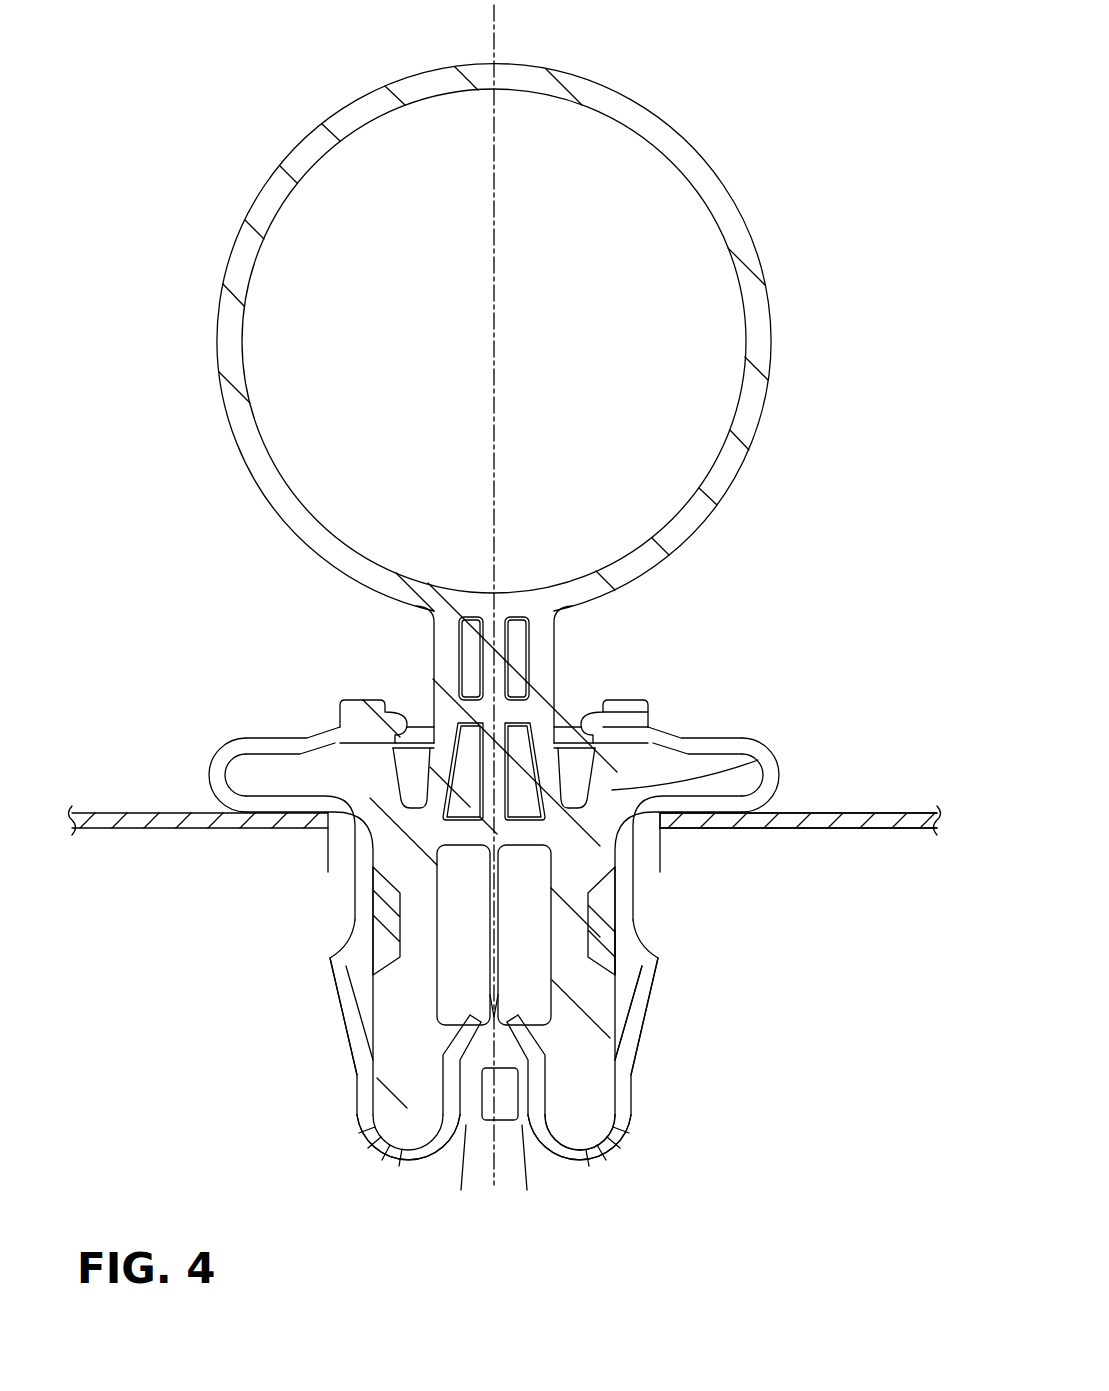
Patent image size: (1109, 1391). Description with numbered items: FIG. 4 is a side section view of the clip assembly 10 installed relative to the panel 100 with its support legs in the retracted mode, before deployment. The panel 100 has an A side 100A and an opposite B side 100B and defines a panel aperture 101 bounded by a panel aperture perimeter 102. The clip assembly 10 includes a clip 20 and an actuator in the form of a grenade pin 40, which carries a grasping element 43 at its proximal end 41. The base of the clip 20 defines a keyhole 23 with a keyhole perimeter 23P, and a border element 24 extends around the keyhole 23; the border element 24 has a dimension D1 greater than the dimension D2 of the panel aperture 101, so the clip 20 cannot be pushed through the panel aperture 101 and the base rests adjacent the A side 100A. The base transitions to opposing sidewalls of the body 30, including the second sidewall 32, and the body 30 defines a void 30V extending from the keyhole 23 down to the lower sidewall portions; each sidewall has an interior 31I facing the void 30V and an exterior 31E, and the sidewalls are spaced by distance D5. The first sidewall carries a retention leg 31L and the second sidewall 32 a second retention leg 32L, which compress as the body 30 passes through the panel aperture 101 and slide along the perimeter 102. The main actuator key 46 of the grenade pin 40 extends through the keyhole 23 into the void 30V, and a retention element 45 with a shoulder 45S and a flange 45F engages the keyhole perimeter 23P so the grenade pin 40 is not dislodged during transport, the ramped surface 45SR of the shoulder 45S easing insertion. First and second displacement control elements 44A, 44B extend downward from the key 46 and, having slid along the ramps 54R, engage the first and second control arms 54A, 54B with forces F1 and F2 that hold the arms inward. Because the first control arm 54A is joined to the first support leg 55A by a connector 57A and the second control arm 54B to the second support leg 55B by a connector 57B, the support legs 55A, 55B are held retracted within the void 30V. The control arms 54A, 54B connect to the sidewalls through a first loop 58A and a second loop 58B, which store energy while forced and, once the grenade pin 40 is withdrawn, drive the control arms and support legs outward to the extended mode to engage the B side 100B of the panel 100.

The clip assembly 10 is at (222, 589).
The clip 20 is at (219, 736).
The keyhole 23 is at (573, 730).
The keyhole perimeter 23P is at (653, 743).
The border element 24 is at (310, 730).
The body 30 is at (657, 940).
The void 30V is at (588, 951).
The exterior 31E is at (640, 1043).
The interior 31I is at (602, 1077).
The retention leg 31L is at (647, 1013).
The second sidewall 32 is at (357, 883).
The second retention leg 32L is at (333, 982).
The grenade pin 40 is at (752, 263).
The proximal end 41 is at (665, 91).
The grasping element 43 is at (775, 362).
The first displacement control element 44A is at (605, 1100).
The second displacement control element 44B is at (385, 1100).
The retention element 45 is at (622, 684).
The flange 45F is at (643, 730).
The shoulder 45S is at (670, 747).
The tooth stop rib 45SR is at (733, 760).
The main actuator key 46 is at (386, 669).
The first control arm 54A is at (513, 1140).
The second control arm 54B is at (475, 1140).
The ramps 54R is at (470, 985).
The first support leg 55A is at (622, 902).
The second support leg 55B is at (363, 905).
The connector 57A is at (524, 935).
The slot 57B is at (467, 935).
The first loop 58A is at (583, 1167).
The second loop 58B is at (405, 1167).
The panel 100 is at (877, 811).
The A side 100A is at (925, 810).
The B side 100B is at (900, 830).
The panel aperture 101 is at (668, 832).
The panel aperture perimeter 102 is at (662, 836).
The dimension of border element D1 is at (860, 775).
The dimension of aperture D2 is at (750, 857).
The distance between side walls D5 is at (358, 1140).
The force F1 is at (547, 1055).
The force F2 is at (441, 1055).